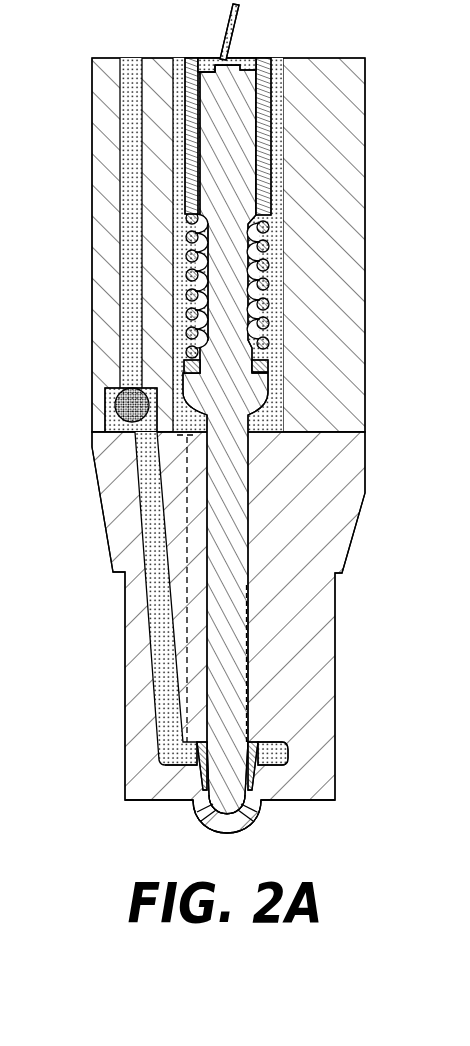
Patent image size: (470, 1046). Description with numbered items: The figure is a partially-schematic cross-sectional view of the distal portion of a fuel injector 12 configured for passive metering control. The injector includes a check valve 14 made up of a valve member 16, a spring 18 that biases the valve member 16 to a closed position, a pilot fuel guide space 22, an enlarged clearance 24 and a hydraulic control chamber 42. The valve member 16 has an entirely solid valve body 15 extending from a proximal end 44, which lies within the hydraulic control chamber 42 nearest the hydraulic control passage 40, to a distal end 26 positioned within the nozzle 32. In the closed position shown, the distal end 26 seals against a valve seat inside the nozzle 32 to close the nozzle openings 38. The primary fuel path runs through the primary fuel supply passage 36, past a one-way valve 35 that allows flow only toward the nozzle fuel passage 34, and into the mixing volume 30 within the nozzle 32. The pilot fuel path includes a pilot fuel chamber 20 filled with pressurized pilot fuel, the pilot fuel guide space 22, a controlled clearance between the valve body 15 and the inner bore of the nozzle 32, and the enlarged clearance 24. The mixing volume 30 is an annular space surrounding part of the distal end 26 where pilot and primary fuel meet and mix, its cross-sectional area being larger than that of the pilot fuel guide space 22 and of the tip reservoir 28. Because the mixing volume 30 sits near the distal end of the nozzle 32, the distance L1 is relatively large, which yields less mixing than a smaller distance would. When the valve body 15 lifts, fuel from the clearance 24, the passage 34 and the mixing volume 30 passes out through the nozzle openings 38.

The fuel injector 12 is at (358, 140).
The check valve 14 is at (326, 313).
The valve body 15 is at (252, 353).
The valve member 16 is at (258, 175).
The spring 18 is at (269, 243).
The pilot fuel chamber 20 is at (281, 410).
The pilot fuel guide space 22 is at (247, 477).
The enlarged clearance 24 is at (248, 605).
The distal end 26 is at (263, 795).
The tip reservoir 28 is at (196, 780).
The mixing volume 30 is at (163, 752).
The nozzle 32 is at (126, 778).
The nozzle fuel passage 34 is at (145, 491).
The one-way valve 35 is at (115, 402).
The primary fuel supply passage 36 is at (128, 197).
The nozzle openings 38 is at (262, 812).
The hydraulic control passage 40 is at (243, 10).
The hydraulic control chamber 42 is at (201, 63).
The proximal end 44 is at (209, 63).
The distance L1 is at (187, 652).